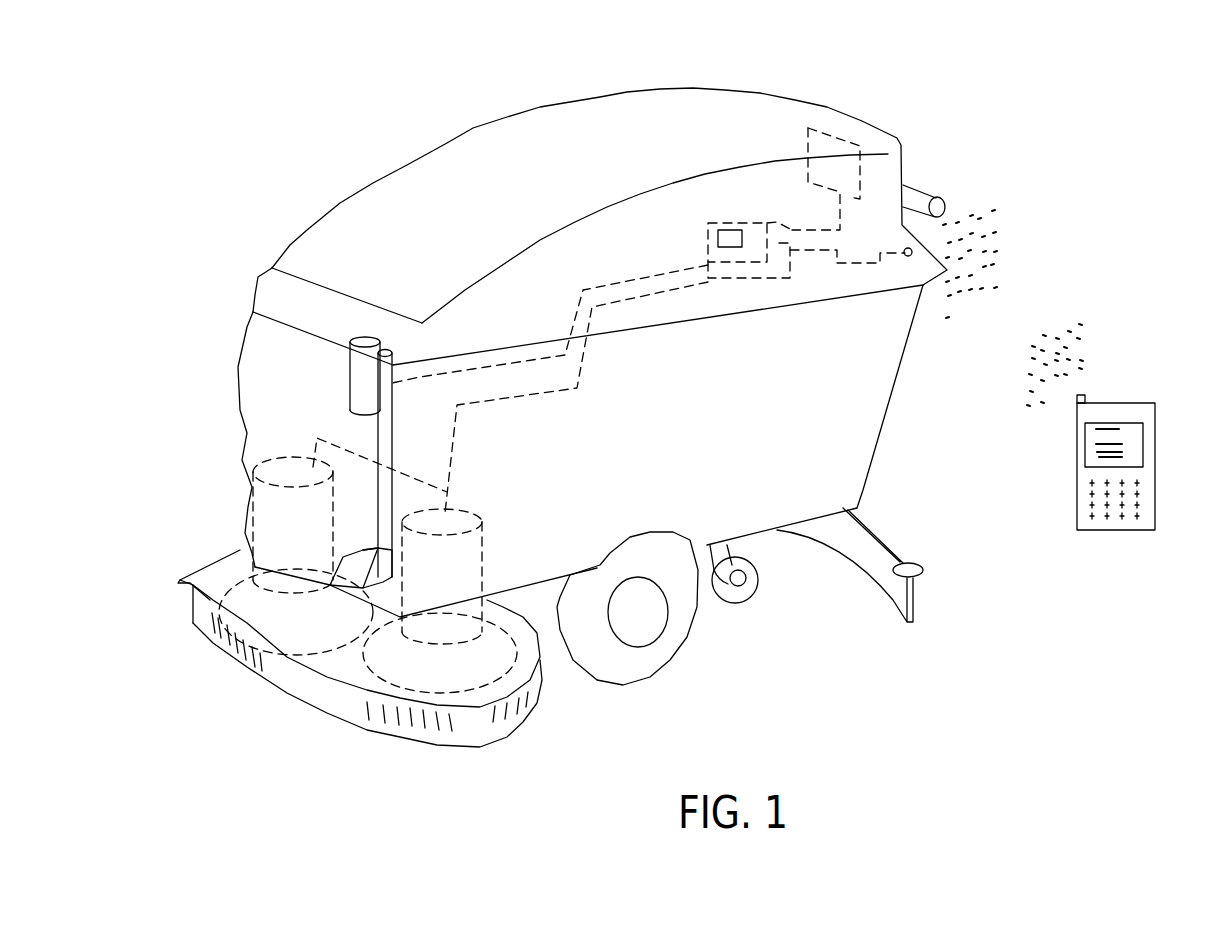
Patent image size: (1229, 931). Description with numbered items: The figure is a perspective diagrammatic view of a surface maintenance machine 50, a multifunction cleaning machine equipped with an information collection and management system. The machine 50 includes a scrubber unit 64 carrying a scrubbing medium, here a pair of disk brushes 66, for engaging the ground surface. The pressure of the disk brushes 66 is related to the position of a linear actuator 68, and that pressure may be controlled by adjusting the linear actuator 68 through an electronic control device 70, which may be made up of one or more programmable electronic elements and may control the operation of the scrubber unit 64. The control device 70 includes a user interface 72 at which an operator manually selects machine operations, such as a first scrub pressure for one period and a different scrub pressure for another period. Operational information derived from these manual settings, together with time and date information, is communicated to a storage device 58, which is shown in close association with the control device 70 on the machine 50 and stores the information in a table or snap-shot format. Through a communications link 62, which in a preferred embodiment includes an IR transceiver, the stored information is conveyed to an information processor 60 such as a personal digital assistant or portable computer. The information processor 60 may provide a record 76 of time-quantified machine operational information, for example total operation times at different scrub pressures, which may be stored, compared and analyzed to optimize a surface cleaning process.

The surface maintenance machine 50 is at (587, 376).
The storage device 58 is at (740, 230).
The information processor 60 is at (1150, 412).
The communications link 62 is at (1115, 340).
The scrubber unit 64 is at (533, 710).
The disk brushes 66 is at (242, 658).
The linear actuator 68 is at (350, 392).
The electronic control device 70 is at (775, 222).
The user interface 72 is at (853, 147).
The record 76 is at (1135, 456).